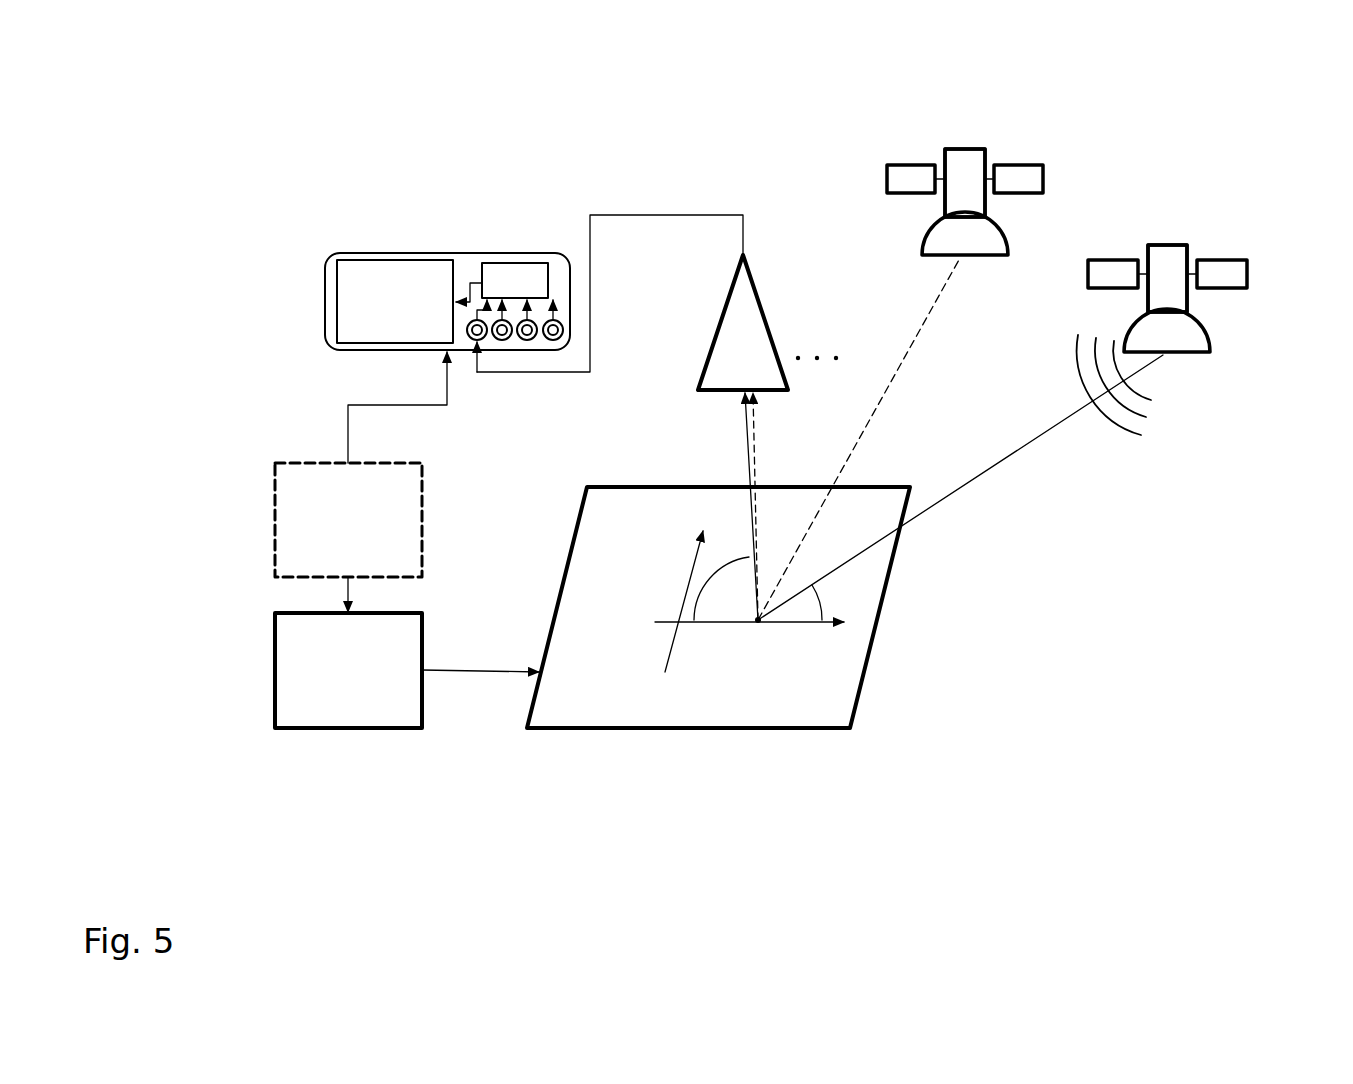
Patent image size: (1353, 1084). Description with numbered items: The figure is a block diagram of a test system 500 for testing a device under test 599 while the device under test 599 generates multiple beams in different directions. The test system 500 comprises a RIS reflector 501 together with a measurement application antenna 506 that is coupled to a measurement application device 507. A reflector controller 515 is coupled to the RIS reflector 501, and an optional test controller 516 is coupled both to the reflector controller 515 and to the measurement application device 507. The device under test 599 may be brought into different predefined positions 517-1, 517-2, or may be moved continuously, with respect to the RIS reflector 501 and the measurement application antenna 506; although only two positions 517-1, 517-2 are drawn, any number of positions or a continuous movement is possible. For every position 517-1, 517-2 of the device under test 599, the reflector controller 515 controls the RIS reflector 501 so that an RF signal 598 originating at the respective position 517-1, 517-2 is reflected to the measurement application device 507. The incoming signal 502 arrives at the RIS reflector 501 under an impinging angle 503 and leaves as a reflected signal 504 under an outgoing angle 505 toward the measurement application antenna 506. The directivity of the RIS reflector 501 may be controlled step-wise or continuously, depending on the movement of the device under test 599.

The test system 500 is at (294, 816).
The RIS reflector 501 is at (570, 705).
The incoming signal 502 is at (1060, 424).
The impinging angle 503 is at (820, 590).
The reflected signal 504 is at (745, 440).
The outgoing angle 505 is at (718, 580).
The measurement application antenna 506 is at (752, 262).
The measurement application device 507 is at (437, 252).
The reflector controller 515 is at (275, 668).
The test controller 516 is at (275, 520).
The position 517-1 is at (1184, 239).
The position 517-2 is at (969, 147).
The RF signal 598 is at (1088, 352).
The device under test 599 is at (950, 148).